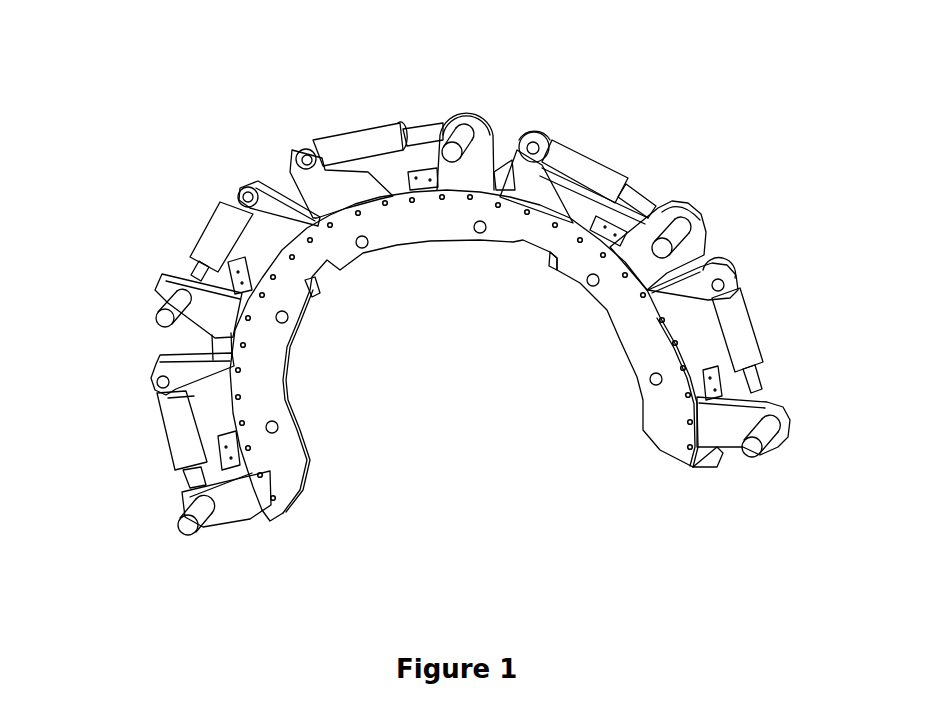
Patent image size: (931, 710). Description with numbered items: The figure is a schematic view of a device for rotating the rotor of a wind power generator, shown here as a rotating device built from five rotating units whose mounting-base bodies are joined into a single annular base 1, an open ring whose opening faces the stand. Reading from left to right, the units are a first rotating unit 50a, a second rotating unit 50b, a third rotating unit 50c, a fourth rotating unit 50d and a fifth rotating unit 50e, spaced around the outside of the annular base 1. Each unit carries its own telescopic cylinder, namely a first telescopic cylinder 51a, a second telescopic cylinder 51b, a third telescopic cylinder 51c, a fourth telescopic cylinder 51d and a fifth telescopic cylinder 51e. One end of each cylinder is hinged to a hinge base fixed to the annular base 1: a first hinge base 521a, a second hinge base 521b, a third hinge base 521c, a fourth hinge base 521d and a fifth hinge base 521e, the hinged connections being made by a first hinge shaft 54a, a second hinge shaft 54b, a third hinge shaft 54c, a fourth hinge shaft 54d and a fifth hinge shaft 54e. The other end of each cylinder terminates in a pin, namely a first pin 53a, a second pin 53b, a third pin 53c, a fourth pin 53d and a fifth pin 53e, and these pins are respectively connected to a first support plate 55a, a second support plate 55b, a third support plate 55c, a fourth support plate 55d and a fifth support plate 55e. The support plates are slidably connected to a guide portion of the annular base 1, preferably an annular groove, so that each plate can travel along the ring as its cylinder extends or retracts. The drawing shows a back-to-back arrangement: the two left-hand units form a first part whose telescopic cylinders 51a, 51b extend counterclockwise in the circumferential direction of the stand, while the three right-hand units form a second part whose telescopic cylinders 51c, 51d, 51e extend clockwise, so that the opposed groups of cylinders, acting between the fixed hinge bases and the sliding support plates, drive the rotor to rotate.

The annular base 1 is at (464, 358).
The first rotating unit 50a is at (73, 483).
The second rotating unit 50b is at (73, 278).
The third rotating unit 50c is at (527, 58).
The fourth rotating unit 50d is at (797, 163).
The fifth rotating unit 50e is at (843, 327).
The first telescopic cylinder 51a is at (178, 440).
The second telescopic cylinder 51b is at (207, 253).
The third telescopic cylinder 51c is at (363, 145).
The fourth telescopic cylinder 51d is at (583, 167).
The fifth telescopic cylinder 51e is at (740, 340).
The first hinge base 521a is at (185, 366).
The second hinge base 521b is at (237, 188).
The third hinge base 521c is at (297, 143).
The fourth hinge base 521d is at (557, 140).
The fifth hinge base 521e is at (698, 287).
The first pin 53a is at (184, 515).
The second pin 53b is at (160, 310).
The third pin 53c is at (462, 137).
The fourth pin 53d is at (667, 237).
The fifth pin 53e is at (762, 416).
The first hinge shaft 54a is at (157, 380).
The second hinge shaft 54b is at (242, 196).
The third hinge shaft 54c is at (309, 155).
The fourth hinge shaft 54d is at (538, 145).
The fifth hinge shaft 54e is at (726, 280).
The first support plate 55a is at (203, 493).
The second support plate 55b is at (175, 286).
The third support plate 55c is at (450, 117).
The fourth support plate 55d is at (693, 232).
The fifth support plate 55e is at (745, 410).